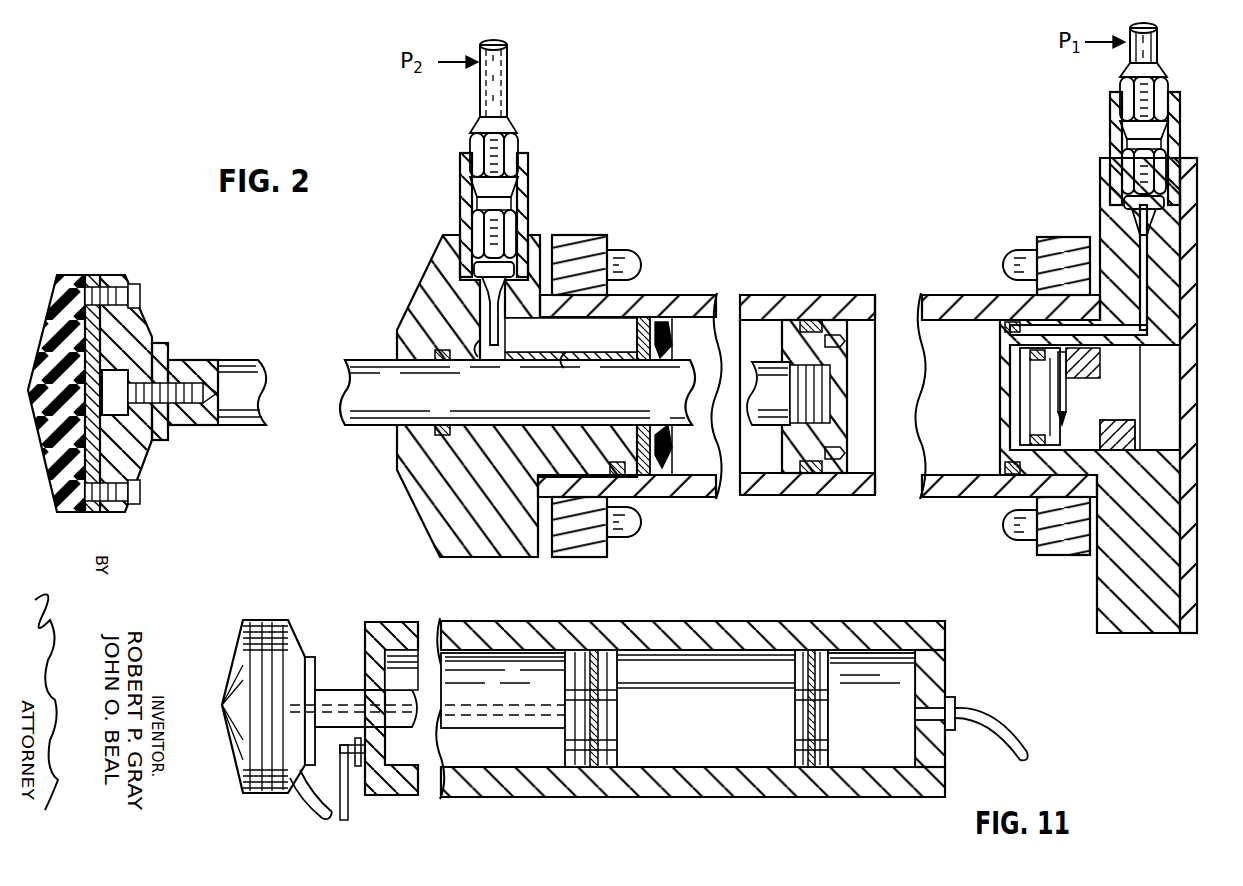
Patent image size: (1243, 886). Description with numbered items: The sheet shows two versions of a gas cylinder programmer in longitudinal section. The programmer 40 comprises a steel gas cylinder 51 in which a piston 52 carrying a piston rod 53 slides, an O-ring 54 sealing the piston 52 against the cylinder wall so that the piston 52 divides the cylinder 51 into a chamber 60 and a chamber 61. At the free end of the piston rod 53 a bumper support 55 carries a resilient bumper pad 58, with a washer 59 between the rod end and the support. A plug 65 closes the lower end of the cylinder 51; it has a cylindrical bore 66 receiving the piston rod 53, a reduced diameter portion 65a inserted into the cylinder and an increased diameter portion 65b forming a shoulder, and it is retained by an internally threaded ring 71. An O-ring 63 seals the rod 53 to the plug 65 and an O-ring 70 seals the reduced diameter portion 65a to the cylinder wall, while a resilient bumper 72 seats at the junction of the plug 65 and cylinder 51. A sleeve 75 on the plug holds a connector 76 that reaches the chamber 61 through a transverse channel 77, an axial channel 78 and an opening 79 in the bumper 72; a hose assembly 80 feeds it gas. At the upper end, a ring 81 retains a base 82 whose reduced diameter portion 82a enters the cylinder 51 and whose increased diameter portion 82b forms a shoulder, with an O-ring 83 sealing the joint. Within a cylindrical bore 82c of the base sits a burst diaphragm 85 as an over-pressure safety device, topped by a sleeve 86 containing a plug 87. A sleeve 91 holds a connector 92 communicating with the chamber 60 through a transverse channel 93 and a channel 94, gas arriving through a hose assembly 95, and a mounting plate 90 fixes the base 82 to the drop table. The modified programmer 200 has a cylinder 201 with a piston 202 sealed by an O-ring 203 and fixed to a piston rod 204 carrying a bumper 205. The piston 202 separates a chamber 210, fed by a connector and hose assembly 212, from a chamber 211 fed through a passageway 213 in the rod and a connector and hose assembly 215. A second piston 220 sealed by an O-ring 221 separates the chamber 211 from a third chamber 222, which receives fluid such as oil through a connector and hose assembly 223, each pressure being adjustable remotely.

In FIG. 2, the bumper pad 58 is at (68, 278).
In FIG. 2, the bumper support 55 is at (170, 325).
In FIG. 2, the washer 59 is at (170, 348).
In FIG. 2, the piston rod 53 is at (240, 422).
In FIG. 2, the hose assembly 80 is at (507, 80).
In FIG. 2, the connector 76 is at (516, 135).
In FIG. 2, the sleeve 75 is at (528, 175).
In FIG. 2, the ring 71 is at (585, 238).
In FIG. 2, the plug 65 is at (413, 292).
In FIG. 2, the cylindrical bore 66 is at (395, 360).
In FIG. 2, the reduced diameter portion 65a is at (593, 344).
In FIG. 2, the increased diameter portion 65b is at (440, 530).
In FIG. 2, the opening 79 is at (672, 340).
In FIG. 2, the transverse channel 77 is at (484, 362).
In FIG. 2, the axial channel 78 is at (574, 372).
In FIG. 2, the O-ring 63 is at (450, 420).
In FIG. 2, the O-ring 70 is at (614, 462).
In FIG. 2, the bumper 72 is at (669, 450).
In FIG. 2, the gas cylinder 51 is at (690, 298).
In FIG. 2, the chamber 61 is at (738, 322).
In FIG. 2, the programmer 40 is at (796, 278).
In FIG. 2, the O-ring 54 is at (820, 318).
In FIG. 2, the chamber 60 is at (862, 392).
In FIG. 2, the piston 52 is at (848, 434).
In FIG. 2, the hose assembly 95 is at (1158, 56).
In FIG. 2, the connector 92 is at (1165, 80).
In FIG. 2, the sleeve 91 is at (1180, 118).
In FIG. 2, the transverse channel 93 is at (1148, 266).
In FIG. 2, the O-ring 83 is at (1003, 330).
In FIG. 2, the channel 94 is at (1008, 338).
In FIG. 2, the burst diaphragm 85 is at (1025, 368).
In FIG. 2, the cylindrical bore 82c is at (1110, 430).
In FIG. 2, the plug 87 is at (1135, 438).
In FIG. 2, the reduced diameter portion 82a is at (1000, 455).
In FIG. 2, the sleeve 86 is at (1126, 462).
In FIG. 2, the increased diameter portion 82b is at (1170, 505).
In FIG. 2, the ring 81 is at (1060, 555).
In FIG. 2, the base 82 is at (1150, 632).
In FIG. 2, the mounting plate 90 is at (1198, 612).
In FIG. 11, the bumper 205 is at (290, 635).
In FIG. 11, the programmer 200 is at (731, 616).
In FIG. 11, the O-ring 203 is at (594, 650).
In FIG. 11, the second piston 220 is at (814, 652).
In FIG. 11, the passageway 213 is at (500, 708).
In FIG. 11, the piston rod 204 is at (500, 728).
In FIG. 11, the piston 202 is at (618, 748).
In FIG. 11, the connector and hose assembly 223 is at (1025, 722).
In FIG. 11, the connector and hose assembly 215 is at (300, 808).
In FIG. 11, the connector and hose assembly 212 is at (348, 812).
In FIG. 11, the chamber 210 is at (493, 765).
In FIG. 11, the cylinder 201 is at (545, 783).
In FIG. 11, the chamber 211 is at (724, 765).
In FIG. 11, the O-ring 221 is at (810, 768).
In FIG. 11, the third chamber 222 is at (876, 765).